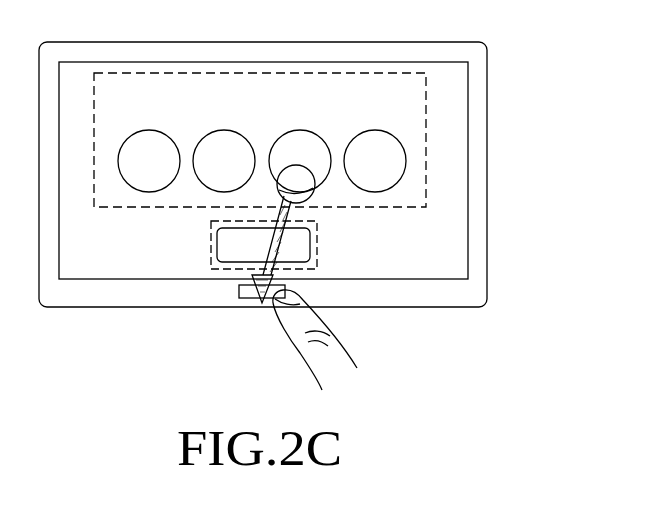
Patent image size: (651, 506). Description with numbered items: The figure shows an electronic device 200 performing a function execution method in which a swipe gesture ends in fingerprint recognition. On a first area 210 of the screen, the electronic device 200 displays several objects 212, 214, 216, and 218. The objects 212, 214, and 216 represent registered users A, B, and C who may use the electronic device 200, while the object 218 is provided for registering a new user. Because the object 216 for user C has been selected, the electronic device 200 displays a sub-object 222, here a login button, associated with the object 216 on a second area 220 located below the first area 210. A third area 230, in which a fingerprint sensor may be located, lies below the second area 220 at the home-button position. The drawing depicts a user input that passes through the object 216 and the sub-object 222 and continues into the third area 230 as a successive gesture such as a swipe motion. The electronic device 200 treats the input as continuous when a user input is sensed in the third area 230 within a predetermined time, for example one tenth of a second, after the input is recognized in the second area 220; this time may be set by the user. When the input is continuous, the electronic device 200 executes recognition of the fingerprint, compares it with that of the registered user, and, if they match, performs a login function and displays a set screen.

The electronic device 200 is at (265, 42).
The first area 210 is at (426, 135).
The object 212 is at (149, 130).
The object 214 is at (225, 130).
The object 216 is at (301, 130).
The object 218 is at (376, 130).
The second area 220 is at (210, 252).
The sub-object 222 is at (228, 257).
The third area 230 is at (250, 298).